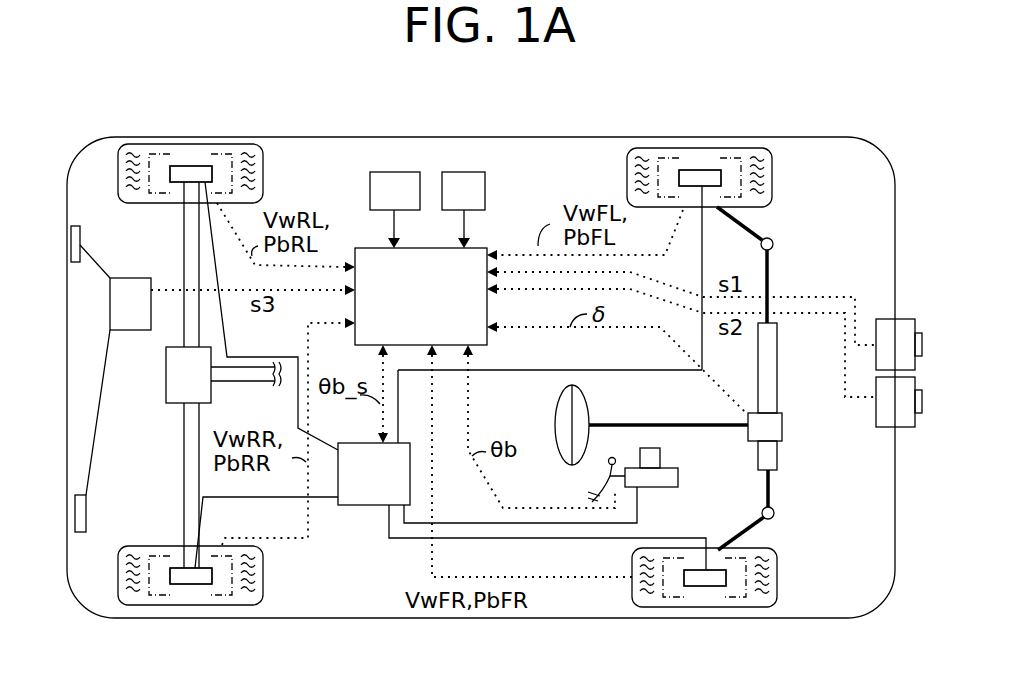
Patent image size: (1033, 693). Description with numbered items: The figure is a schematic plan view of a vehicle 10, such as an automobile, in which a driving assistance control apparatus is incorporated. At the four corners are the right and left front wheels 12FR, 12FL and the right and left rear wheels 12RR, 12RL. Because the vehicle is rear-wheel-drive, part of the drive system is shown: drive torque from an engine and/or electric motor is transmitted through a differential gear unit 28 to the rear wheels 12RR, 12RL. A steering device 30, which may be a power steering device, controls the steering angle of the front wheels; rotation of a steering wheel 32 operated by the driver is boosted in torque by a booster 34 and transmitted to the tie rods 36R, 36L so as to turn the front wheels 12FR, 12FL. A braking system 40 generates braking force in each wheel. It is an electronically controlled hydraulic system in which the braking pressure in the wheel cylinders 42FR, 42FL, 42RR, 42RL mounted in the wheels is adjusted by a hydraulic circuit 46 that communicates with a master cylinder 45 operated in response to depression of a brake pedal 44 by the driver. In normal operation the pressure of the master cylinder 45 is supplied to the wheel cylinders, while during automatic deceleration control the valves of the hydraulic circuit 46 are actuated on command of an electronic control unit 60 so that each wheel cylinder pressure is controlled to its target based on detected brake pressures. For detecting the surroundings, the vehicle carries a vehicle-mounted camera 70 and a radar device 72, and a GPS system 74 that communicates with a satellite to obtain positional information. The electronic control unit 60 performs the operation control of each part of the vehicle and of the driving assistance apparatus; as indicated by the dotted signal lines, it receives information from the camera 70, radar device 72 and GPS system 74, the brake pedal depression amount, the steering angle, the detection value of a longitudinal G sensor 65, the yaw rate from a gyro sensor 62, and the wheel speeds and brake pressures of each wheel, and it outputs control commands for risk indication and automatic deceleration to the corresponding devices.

The vehicle 10 is at (507, 135).
The left rear wheel 12RL is at (113, 167).
The left front wheel 12FL is at (760, 118).
The right rear wheel 12RR is at (117, 592).
The right front wheel 12FR is at (777, 582).
The wheel cylinder 42RL is at (195, 168).
The wheel cylinder 42FL is at (695, 170).
The wheel cylinder 42RR is at (193, 584).
The wheel cylinder 42FR is at (708, 586).
The differential gear unit 28 is at (202, 387).
The steering device 30 is at (778, 400).
The steering wheel 32 is at (556, 410).
The booster 34 is at (782, 433).
The left tie rod 36L is at (760, 238).
The right tie rod 36R is at (758, 532).
The braking system 40 is at (367, 508).
The brake pedal 44 is at (590, 500).
The master cylinder 45 is at (652, 487).
The hydraulic circuit 46 is at (388, 486).
The electronic control unit 60 is at (435, 309).
The gyro sensor 62 is at (486, 180).
The longitudinal G sensor 65 is at (377, 172).
The vehicle-mounted camera 70 is at (909, 356).
The radar device 72 is at (909, 414).
The GPS system 74 is at (143, 317).